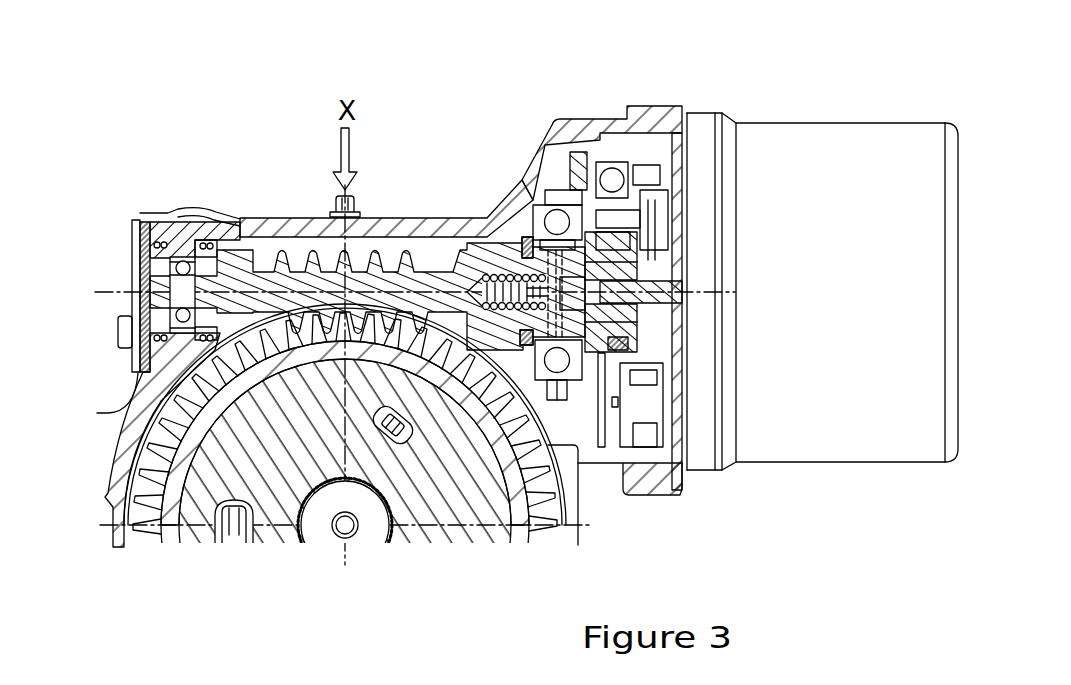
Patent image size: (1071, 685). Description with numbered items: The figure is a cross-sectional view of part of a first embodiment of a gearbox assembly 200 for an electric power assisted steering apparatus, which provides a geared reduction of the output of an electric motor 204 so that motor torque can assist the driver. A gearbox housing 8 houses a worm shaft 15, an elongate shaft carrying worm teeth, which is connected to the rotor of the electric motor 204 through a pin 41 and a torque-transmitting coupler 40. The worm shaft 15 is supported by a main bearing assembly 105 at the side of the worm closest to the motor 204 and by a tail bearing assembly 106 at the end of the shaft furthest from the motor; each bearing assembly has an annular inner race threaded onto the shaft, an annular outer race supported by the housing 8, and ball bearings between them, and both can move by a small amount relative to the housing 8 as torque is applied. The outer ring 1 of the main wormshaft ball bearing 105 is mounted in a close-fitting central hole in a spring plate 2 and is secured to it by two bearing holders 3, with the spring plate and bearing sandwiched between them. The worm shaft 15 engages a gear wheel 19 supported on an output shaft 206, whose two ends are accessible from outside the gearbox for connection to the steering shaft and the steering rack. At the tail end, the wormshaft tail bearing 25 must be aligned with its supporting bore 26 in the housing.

The outer ring 1 is at (533, 200).
The spring plate 2 is at (552, 167).
The bearing holders 3 is at (520, 217).
The gearbox housing 8 is at (458, 223).
The worm shaft 15 is at (315, 257).
The gear wheel 19 is at (543, 502).
The wormshaft tail bearing 25 is at (168, 242).
The supporting bore 26 is at (155, 255).
The torque-transmitting coupler 40 is at (602, 335).
The pin 41 is at (642, 302).
The main bearing assembly 105 is at (535, 410).
The tail bearing assembly 106 is at (157, 320).
The gearbox assembly 200 is at (610, 80).
The electric motor 204 is at (797, 118).
The output shaft 206 is at (357, 545).